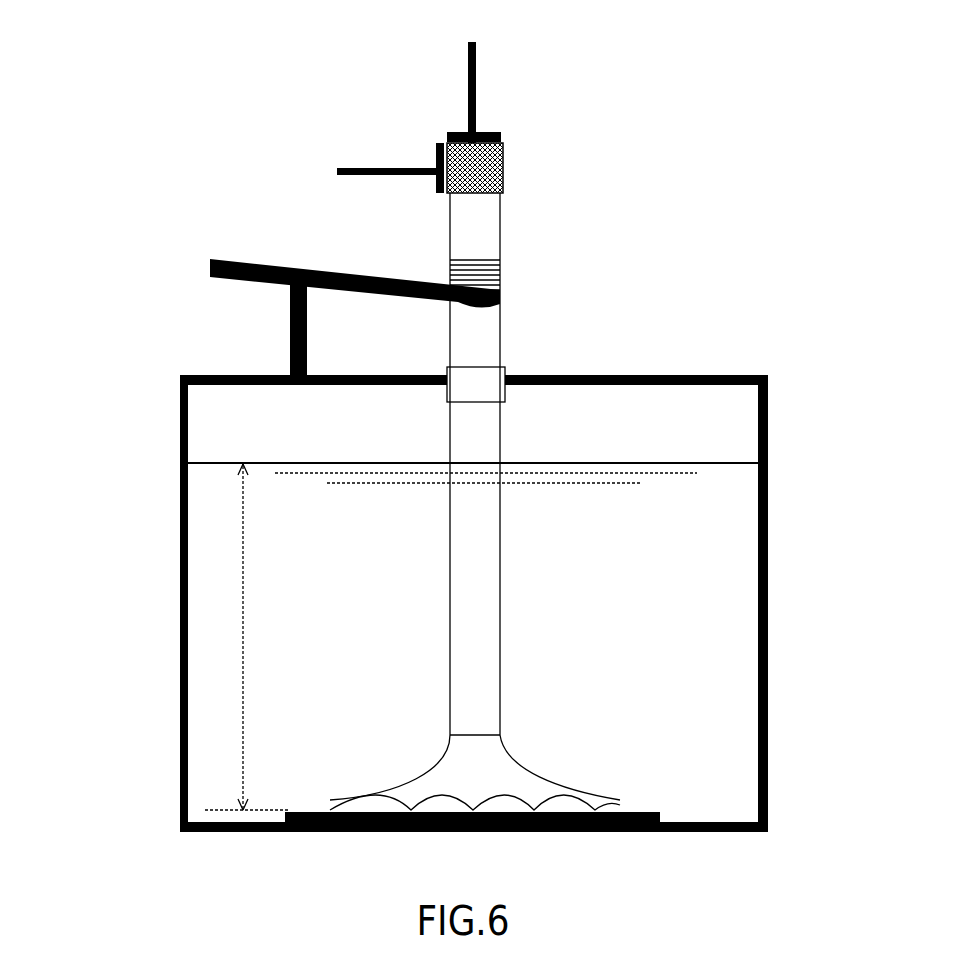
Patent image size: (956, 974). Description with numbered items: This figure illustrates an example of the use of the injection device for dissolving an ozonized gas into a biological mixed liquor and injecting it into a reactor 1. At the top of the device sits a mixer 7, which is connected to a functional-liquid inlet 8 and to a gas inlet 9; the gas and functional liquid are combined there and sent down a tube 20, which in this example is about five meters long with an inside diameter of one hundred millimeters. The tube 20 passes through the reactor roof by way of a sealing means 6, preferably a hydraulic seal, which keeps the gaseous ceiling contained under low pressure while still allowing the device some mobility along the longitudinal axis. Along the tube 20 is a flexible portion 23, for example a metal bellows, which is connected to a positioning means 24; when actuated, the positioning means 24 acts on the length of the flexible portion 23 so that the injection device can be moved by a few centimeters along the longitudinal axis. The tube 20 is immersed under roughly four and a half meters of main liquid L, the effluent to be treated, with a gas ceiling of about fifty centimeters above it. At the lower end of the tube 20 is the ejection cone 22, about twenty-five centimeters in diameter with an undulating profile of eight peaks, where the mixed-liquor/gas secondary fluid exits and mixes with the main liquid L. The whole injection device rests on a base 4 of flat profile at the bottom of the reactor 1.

The reactor 1 is at (193, 372).
The base 4 is at (660, 812).
The sealing means 6 is at (507, 376).
The mixer 7 is at (502, 167).
The functional-liquid inlet 8 is at (468, 73).
The gas inlet 9 is at (355, 168).
The tube 20 is at (472, 533).
The cone 22 is at (493, 775).
The flexible portion 23 is at (502, 280).
The positioning means 24 is at (227, 258).
The main liquid L is at (223, 605).